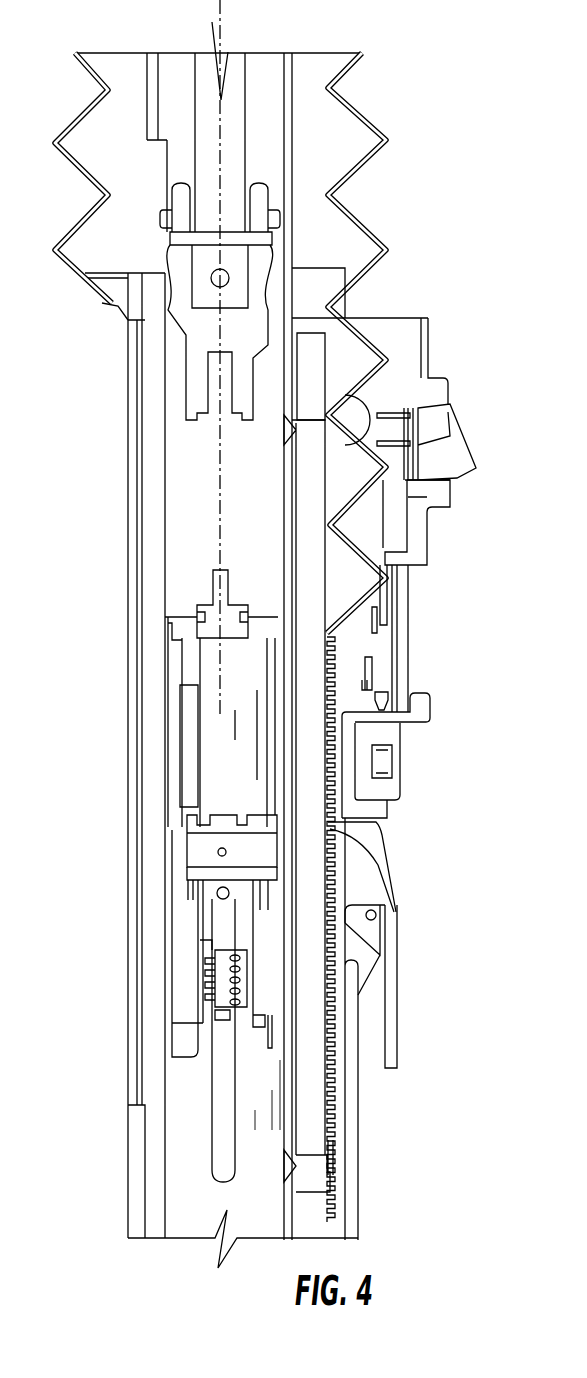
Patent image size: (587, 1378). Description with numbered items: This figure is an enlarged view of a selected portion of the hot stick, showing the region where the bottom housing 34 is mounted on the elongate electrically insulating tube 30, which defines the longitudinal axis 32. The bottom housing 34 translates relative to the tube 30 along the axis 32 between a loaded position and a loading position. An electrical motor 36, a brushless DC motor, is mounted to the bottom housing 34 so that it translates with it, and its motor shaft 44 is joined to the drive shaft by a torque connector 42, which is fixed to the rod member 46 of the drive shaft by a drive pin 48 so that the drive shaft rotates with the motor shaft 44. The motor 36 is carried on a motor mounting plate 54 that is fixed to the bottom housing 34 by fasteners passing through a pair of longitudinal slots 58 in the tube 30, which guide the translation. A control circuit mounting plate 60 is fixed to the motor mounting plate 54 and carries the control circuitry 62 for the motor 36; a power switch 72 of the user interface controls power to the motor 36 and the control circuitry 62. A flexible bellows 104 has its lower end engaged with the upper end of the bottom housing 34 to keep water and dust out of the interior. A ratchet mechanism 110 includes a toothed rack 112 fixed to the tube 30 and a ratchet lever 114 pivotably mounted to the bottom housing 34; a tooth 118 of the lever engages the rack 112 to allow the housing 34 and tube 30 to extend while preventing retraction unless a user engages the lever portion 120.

The elongate electrically insulating tube 30 is at (180, 1228).
The longitudinal axis 32 is at (222, 35).
The bottom housing 34 is at (436, 317).
The electrical motor 36 is at (180, 632).
The torque connector 42 is at (160, 255).
The motor shaft 44 is at (207, 381).
The rod member 46 is at (197, 77).
The drive pin 48 is at (263, 235).
The motor mounting plate 54 is at (193, 850).
The longitudinal slots 58 is at (228, 1176).
The control circuit mounting plate 60 is at (193, 875).
The control circuitry 62 is at (185, 984).
The power switch 72 is at (468, 440).
The flexible bellows 104 is at (360, 120).
The ratchet mechanism 110 is at (418, 820).
The toothed rack 112 is at (320, 1103).
The ratchet lever 114 is at (408, 918).
The tooth 118 is at (330, 826).
The lever portion 120 is at (392, 1022).